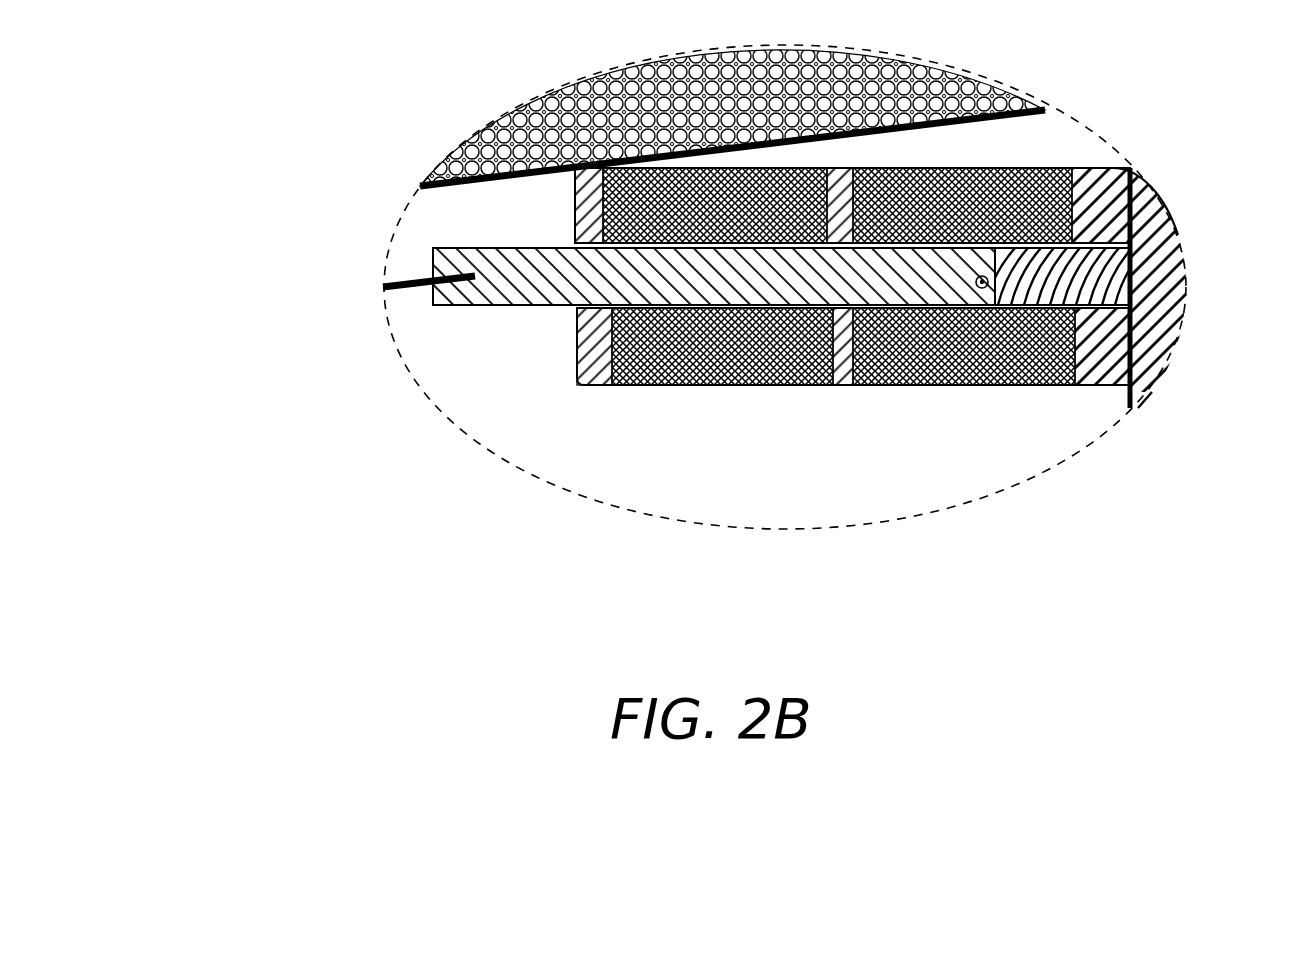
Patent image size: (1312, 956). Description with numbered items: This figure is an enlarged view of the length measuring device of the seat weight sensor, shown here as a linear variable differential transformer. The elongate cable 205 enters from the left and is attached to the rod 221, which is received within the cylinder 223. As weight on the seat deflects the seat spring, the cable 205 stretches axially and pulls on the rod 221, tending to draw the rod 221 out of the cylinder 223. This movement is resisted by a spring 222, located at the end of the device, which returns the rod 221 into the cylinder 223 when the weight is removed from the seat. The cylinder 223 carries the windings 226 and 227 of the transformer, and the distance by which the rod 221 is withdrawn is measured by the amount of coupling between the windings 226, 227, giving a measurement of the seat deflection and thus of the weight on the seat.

The cable 205 is at (407, 287).
The rod 221 is at (548, 303).
The spring 222 is at (1037, 285).
The cylinder 223 is at (610, 388).
The winding 226 is at (682, 388).
The winding 227 is at (913, 388).